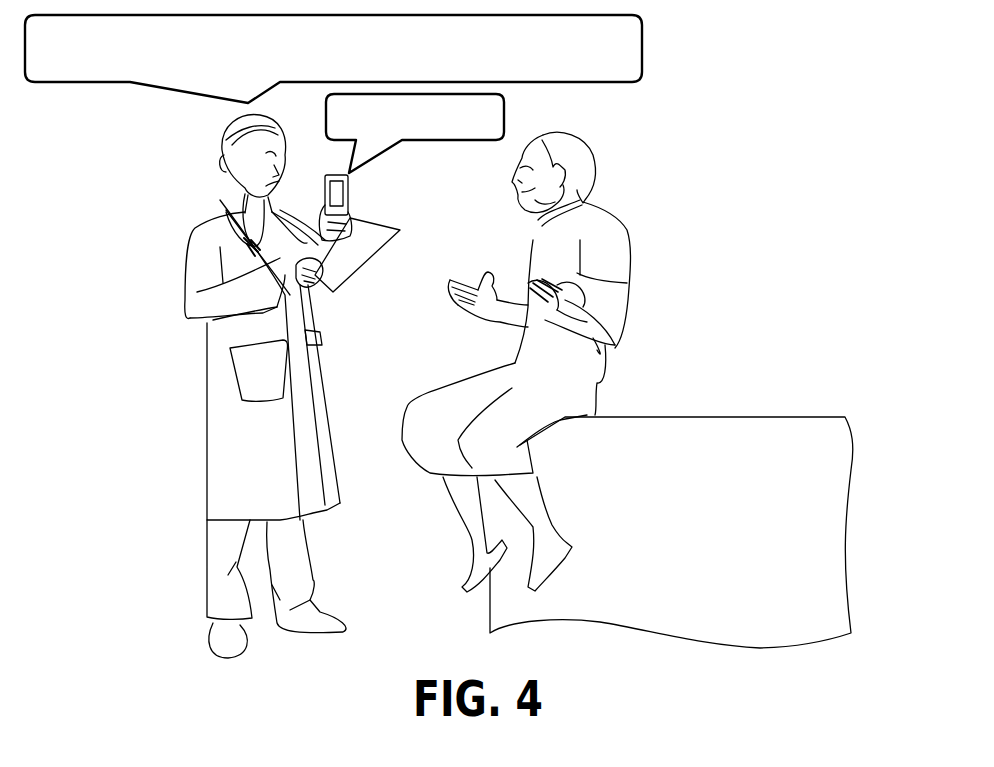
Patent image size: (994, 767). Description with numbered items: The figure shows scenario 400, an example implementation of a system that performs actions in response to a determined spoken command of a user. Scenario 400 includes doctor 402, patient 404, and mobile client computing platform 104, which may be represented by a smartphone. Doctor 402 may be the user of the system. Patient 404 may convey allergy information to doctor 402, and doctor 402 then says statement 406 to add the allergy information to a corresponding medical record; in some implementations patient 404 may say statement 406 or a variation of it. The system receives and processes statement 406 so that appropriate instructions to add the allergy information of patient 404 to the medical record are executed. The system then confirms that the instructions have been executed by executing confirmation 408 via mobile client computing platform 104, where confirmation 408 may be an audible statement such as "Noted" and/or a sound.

The scenario 400 is at (625, 108).
The doctor 402 is at (148, 547).
The patient 404 is at (535, 448).
The mobile client computing platform 104 is at (356, 194).
The statement 406 is at (617, 61).
The confirmation 408 is at (485, 126).